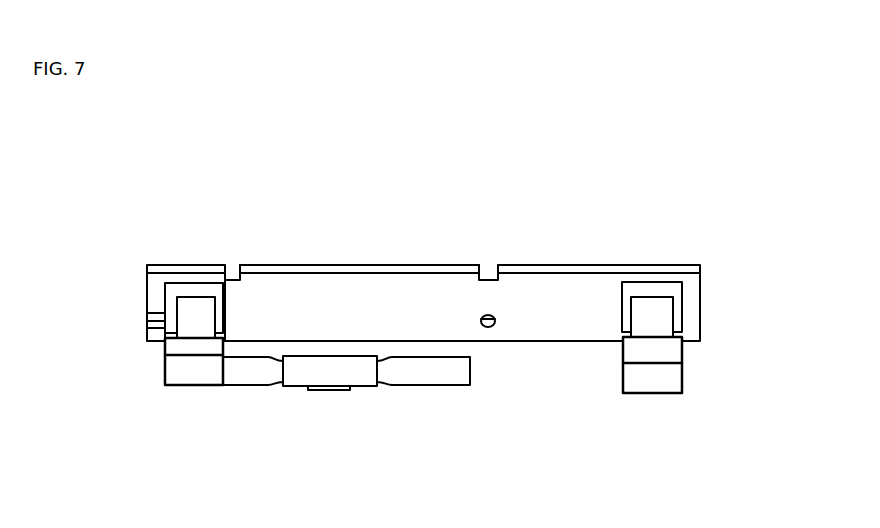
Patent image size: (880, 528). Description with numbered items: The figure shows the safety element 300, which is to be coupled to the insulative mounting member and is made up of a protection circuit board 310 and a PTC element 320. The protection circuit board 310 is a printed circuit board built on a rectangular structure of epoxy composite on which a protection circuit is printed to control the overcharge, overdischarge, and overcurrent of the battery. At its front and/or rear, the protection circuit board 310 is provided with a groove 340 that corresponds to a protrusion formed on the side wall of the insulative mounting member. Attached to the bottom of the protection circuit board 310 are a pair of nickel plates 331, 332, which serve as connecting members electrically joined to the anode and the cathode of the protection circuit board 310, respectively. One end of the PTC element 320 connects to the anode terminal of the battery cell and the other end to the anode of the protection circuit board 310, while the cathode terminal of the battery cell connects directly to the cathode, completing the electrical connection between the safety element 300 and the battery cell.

The safety element 300 is at (78, 184).
The protection circuit board 310 is at (400, 265).
The groove 340 is at (490, 268).
The nickel plate 331 is at (165, 348).
The nickel plate 332 is at (682, 352).
The PTC element 320 is at (287, 388).